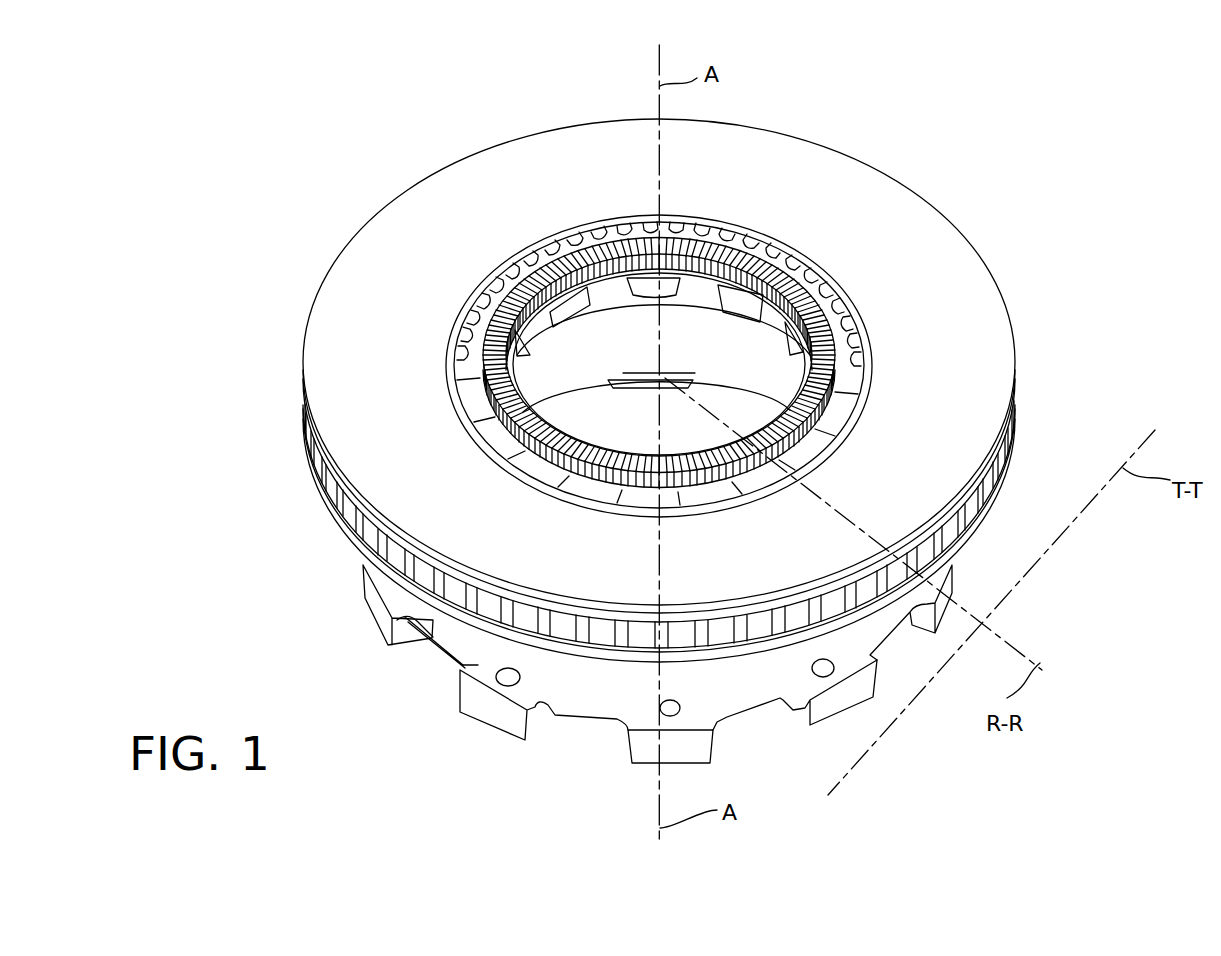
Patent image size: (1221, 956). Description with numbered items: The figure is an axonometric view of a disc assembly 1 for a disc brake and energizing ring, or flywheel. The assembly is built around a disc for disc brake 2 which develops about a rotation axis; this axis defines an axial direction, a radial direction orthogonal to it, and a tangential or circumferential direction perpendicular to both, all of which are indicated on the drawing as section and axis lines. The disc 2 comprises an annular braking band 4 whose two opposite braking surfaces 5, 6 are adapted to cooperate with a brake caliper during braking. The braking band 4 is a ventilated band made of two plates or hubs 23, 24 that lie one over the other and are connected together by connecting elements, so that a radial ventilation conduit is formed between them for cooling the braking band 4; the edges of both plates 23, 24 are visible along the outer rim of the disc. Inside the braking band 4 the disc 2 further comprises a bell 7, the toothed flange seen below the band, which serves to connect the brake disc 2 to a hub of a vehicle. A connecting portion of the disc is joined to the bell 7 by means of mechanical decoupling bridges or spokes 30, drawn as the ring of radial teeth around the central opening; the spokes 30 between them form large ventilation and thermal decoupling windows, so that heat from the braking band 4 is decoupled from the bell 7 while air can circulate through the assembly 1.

The disc assembly 1 is at (982, 153).
The disc for disc brake 2 is at (927, 262).
The braking band 4 is at (370, 263).
The braking surface 5 is at (405, 438).
The braking surface 6 is at (345, 535).
The bell 7 is at (463, 665).
The plate 23 is at (1013, 350).
The plate 24 is at (1013, 450).
The spokes 30 is at (820, 418).